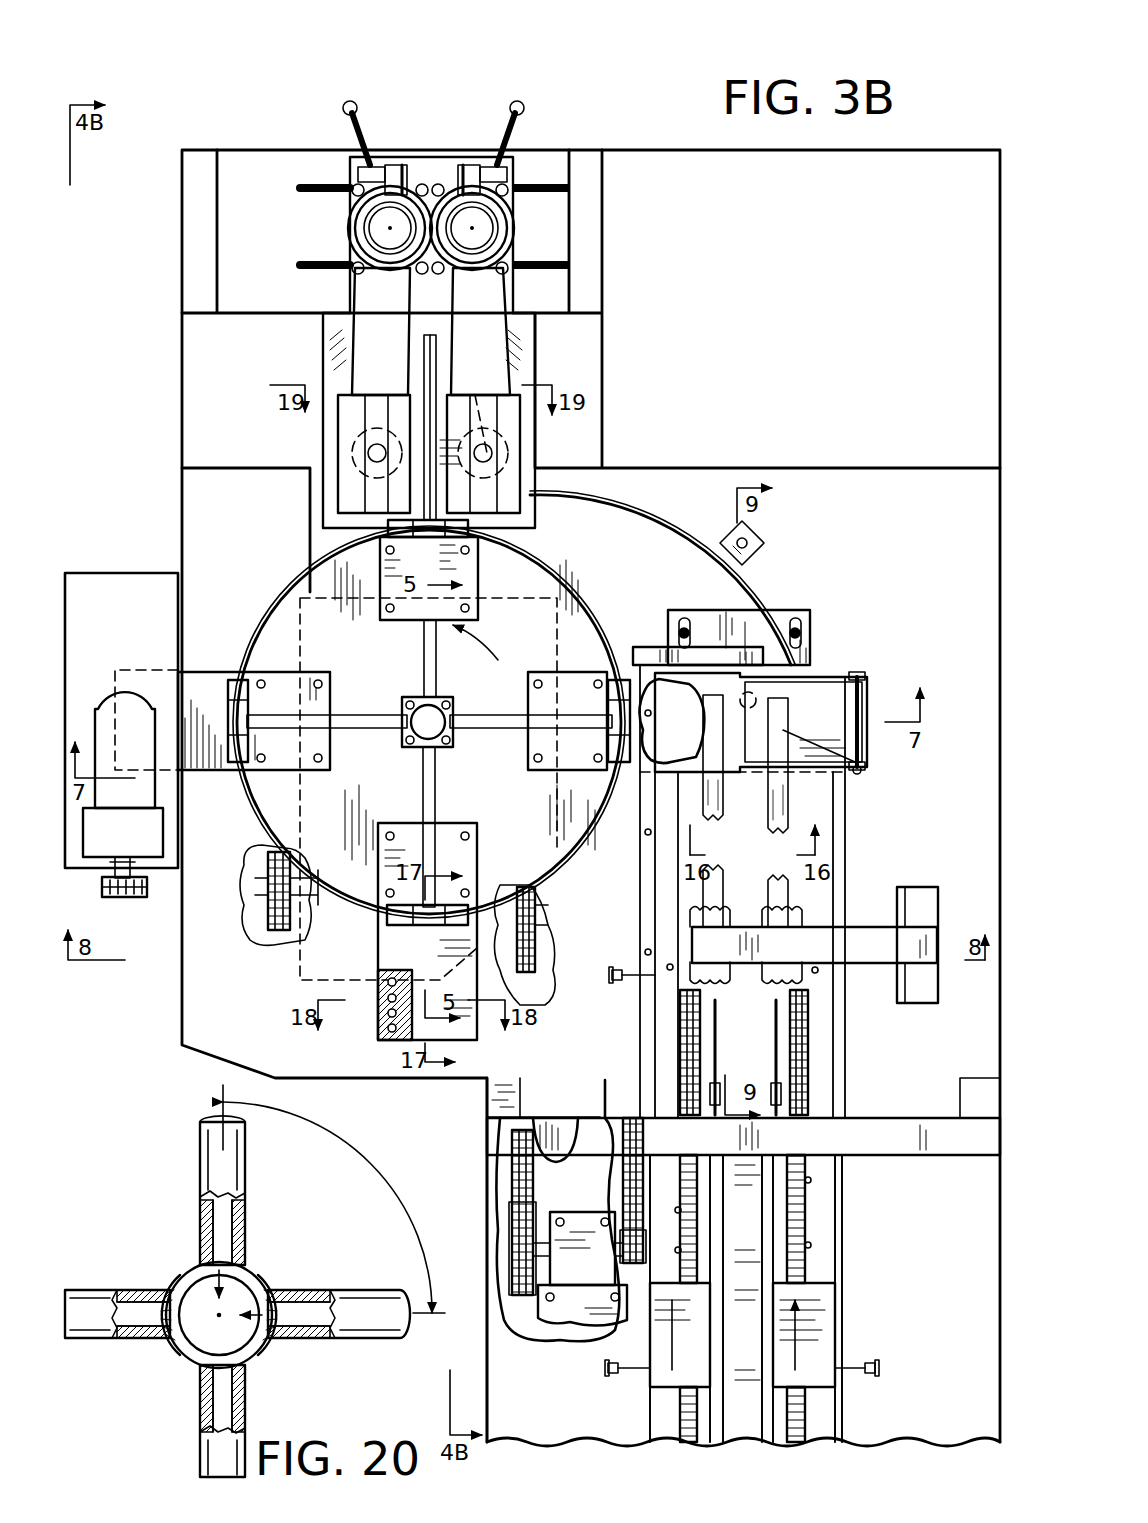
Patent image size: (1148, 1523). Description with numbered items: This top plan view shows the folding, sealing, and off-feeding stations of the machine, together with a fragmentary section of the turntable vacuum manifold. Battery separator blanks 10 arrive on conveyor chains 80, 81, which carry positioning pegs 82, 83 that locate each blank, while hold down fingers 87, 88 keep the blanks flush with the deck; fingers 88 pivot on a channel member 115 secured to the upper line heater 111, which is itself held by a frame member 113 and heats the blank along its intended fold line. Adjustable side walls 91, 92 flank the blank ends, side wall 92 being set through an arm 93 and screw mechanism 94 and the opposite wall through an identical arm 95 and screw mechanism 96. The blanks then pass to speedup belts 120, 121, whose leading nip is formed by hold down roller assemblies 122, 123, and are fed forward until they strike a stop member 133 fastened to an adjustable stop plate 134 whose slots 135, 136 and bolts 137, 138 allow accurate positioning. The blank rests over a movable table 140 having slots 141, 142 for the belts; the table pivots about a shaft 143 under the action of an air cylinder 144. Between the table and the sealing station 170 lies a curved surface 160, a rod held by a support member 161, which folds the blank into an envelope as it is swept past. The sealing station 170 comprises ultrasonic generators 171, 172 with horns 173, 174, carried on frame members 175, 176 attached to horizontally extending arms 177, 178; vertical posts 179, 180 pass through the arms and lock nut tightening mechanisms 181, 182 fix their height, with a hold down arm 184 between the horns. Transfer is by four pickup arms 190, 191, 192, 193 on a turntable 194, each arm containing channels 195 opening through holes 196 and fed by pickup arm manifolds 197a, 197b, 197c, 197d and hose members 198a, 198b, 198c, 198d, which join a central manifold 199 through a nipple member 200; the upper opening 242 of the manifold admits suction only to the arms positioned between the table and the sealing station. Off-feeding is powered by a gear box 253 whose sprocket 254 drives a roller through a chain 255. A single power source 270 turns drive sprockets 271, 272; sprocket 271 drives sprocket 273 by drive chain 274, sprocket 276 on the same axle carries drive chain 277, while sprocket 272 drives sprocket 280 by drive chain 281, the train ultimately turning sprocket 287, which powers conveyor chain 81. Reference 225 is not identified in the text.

In FIG. 3B, the battery separator blank 10 is at (840, 667).
In FIG. 3B, the conveyor chain 80 is at (778, 1415).
In FIG. 3B, the conveyor chain 81 is at (707, 1420).
In FIG. 3B, the positioning peg 82 is at (805, 1410).
In FIG. 3B, the positioning peg 83 is at (682, 1400).
In FIG. 3B, the hold down finger 87 is at (776, 1030).
In FIG. 3B, the hold down finger 88 is at (718, 1010).
In FIG. 3B, the adjustable side wall 91 is at (838, 1420).
In FIG. 3B, the adjustable side wall 92 is at (650, 1430).
In FIG. 3B, the arm 93 is at (628, 968).
In FIG. 3B, the adjustable screw mechanism 94 is at (610, 980).
In FIG. 3B, the arm 95 is at (868, 1362).
In FIG. 3B, the screw mechanism 96 is at (877, 1376).
In FIG. 3B, the upper line heater 111 is at (745, 1425).
In FIG. 3B, the frame member 113 is at (855, 1145).
In FIG. 3B, the channel member 115 is at (718, 1340).
In FIG. 3B, the speedup belt 120 is at (788, 820).
In FIG. 3B, the speedup belt 121 is at (723, 830).
In FIG. 3B, the hold down roller assembly 122 is at (770, 907).
In FIG. 3B, the hold down roller assembly 123 is at (710, 905).
In FIG. 3B, the stop member 133 is at (650, 655).
In FIG. 3B, the adjustable stop plate 134 is at (740, 622).
In FIG. 3B, the slot 135 is at (797, 618).
In FIG. 3B, the slot 136 is at (683, 618).
In FIG. 3B, the bolt 137 is at (800, 628).
In FIG. 3B, the bolt 138 is at (678, 628).
In FIG. 3B, the movable table 140 is at (803, 722).
In FIG. 3B, the slot 141 is at (860, 762).
In FIG. 3B, the slot 142 is at (670, 740).
In FIG. 3B, the shaft 143 is at (860, 700).
In FIG. 3B, the air cylinder 144 is at (756, 697).
In FIG. 3B, the curved surface 160 is at (652, 516).
In FIG. 3B, the support member 161 is at (760, 543).
In FIG. 3B, the sealing station 170 is at (545, 440).
In FIG. 3B, the ultrasonic generator 171 is at (476, 411).
In FIG. 3B, the ultrasonic generator 172 is at (368, 453).
In FIG. 3B, the ultrasonic horn 173 is at (482, 395).
In FIG. 3B, the ultrasonic horn 174 is at (380, 395).
In FIG. 3B, the frame member 175 is at (495, 303).
In FIG. 3B, the frame member 176 is at (370, 305).
In FIG. 3B, the horizontally extending arm 177 is at (500, 268).
In FIG. 3B, the horizontally extending arm 178 is at (360, 262).
In FIG. 3B, the vertical post 179 is at (497, 222).
In FIG. 3B, the vertical post 180 is at (365, 222).
In FIG. 3B, the lock nut tightening mechanism 181 is at (508, 130).
In FIG. 3B, the lock nut tightening mechanism 182 is at (362, 130).
In FIG. 3B, the hold down arm 184 is at (436, 350).
In FIG. 3B, the pickup arm 190 is at (582, 762).
In FIG. 3B, the pickup arm 191 is at (468, 570).
In FIG. 3B, the pickup arm 192 is at (200, 690).
In FIG. 3B, the pickup arm 193 is at (462, 1260).
In FIG. 3B, the turntable 194 is at (393, 778).
In FIG. 3B, the channel 195 is at (378, 975).
In FIG. 3B, the hole 196 is at (388, 1013).
In FIG. 3B, the pickup arm manifold 197a is at (415, 925).
In FIG. 3B, the pickup arm manifold 197b is at (612, 710).
In FIG. 3B, the pickup arm manifold 197c is at (388, 528).
In FIG. 3B, the pickup arm manifold 197d is at (238, 762).
In FIG. 3B, the hose member 198a is at (435, 800).
In FIG. 20, the hose member 198a is at (200, 1455).
In FIG. 3B, the hose member 198b is at (490, 704).
In FIG. 20, the hose member 198b is at (360, 1305).
In FIG. 3B, the hose member 198c is at (424, 637).
In FIG. 20, the hose member 198c is at (245, 1163).
In FIG. 3B, the hose member 198d is at (355, 704).
In FIG. 20, the hose member 198d is at (100, 1340).
In FIG. 20, the central manifold 199 is at (180, 1352).
In FIG. 3B, the nipple member 200 is at (435, 710).
In FIG. 20, the nipple member 200 is at (250, 1278).
In FIG. 3B, the shaft 225 is at (300, 905).
In FIG. 20, the upper opening 242 is at (257, 1293).
In FIG. 3B, the gear box 253 is at (102, 712).
In FIG. 3B, the sprocket 254 is at (128, 897).
In FIG. 3B, the chain 255 is at (104, 893).
In FIG. 3B, the power source 270 is at (550, 1318).
In FIG. 3B, the drive sprocket 271 is at (512, 1218).
In FIG. 3B, the drive sprocket 272 is at (622, 1262).
In FIG. 3B, the sprocket 273 is at (540, 915).
In FIG. 3B, the drive chain 274 is at (528, 975).
In FIG. 3B, the sprocket 276 is at (260, 935).
In FIG. 3B, the drive chain 277 is at (268, 870).
In FIG. 3B, the sprocket 280 is at (625, 1140).
In FIG. 3B, the drive chain 281 is at (623, 1185).
In FIG. 3B, the sprocket 287 is at (680, 1020).